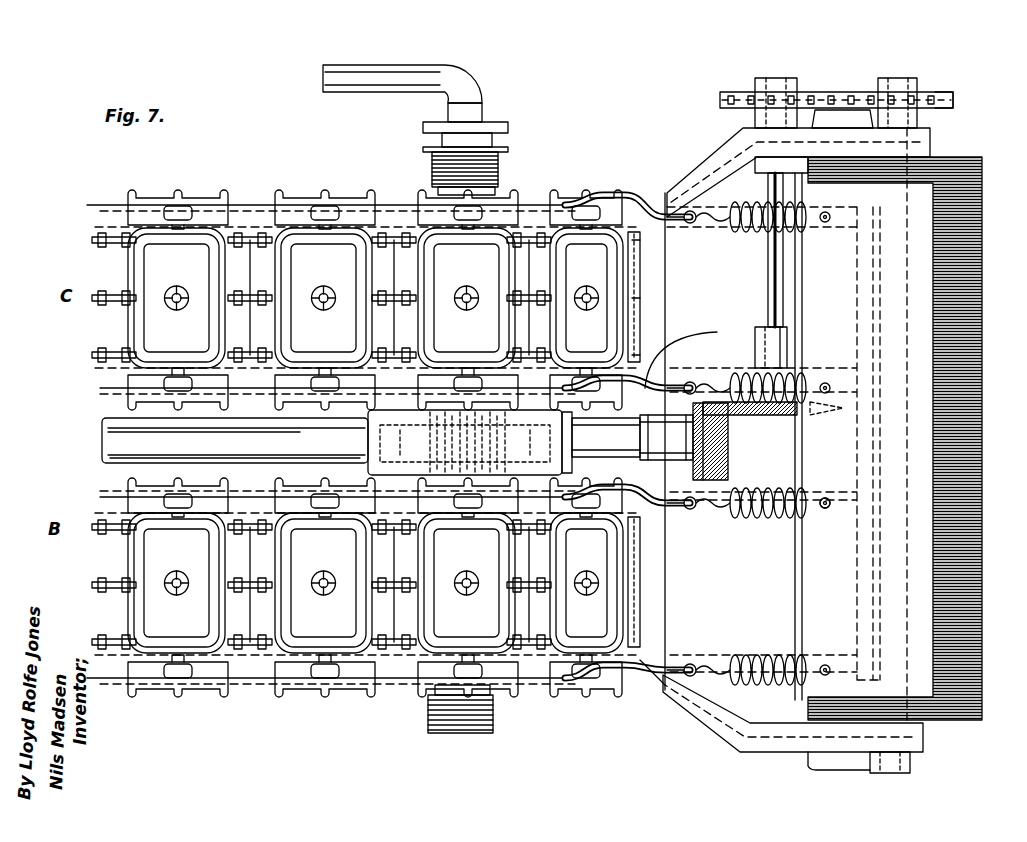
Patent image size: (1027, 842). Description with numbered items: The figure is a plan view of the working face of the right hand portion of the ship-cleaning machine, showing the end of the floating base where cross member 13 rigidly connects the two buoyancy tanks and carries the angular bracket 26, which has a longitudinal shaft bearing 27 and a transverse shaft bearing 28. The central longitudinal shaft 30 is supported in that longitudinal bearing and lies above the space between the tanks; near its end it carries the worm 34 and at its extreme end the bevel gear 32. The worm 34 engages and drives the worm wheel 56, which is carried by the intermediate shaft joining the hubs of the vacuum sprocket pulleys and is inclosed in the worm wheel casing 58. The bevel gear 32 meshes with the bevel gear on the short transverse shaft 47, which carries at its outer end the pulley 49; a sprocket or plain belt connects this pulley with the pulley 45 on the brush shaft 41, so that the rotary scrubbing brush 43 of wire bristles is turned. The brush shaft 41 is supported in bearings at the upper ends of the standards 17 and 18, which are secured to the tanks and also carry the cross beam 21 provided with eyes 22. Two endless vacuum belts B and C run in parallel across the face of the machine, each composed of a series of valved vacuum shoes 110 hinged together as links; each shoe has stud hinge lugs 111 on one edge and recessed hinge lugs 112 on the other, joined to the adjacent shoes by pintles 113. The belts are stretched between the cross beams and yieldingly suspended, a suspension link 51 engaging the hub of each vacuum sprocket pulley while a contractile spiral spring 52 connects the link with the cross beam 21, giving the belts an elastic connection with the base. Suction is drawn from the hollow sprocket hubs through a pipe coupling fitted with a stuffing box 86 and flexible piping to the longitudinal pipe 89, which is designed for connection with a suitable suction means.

The valved vacuum shoe 110 is at (375, 440).
The recessed hinge lugs 112 is at (392, 335).
The pintles 113 is at (394, 332).
The stud hinge lugs 111 is at (262, 540).
The central longitudinal shaft 30 is at (120, 441).
The worm 34 is at (368, 445).
The worm wheel 56 is at (465, 442).
The worm wheel casing 58 is at (486, 445).
The longitudinal shaft bearing 27 is at (655, 438).
The bevel gear 32 is at (728, 462).
The angular bracket 26 is at (692, 340).
The transverse shaft bearing 28 is at (757, 335).
The short transverse shaft 47 is at (768, 262).
The cross beam 21 is at (797, 588).
The rotary scrubbing brush 43 is at (962, 455).
The standard 18 is at (930, 147).
The pulley 49 is at (722, 100).
The brush shaft 41 is at (895, 80).
The pulley 45 is at (936, 92).
The contractile spiral spring 52 is at (748, 518).
The eyes 22 is at (825, 510).
The cross member 13 is at (745, 705).
The standard 17 is at (912, 742).
The suspension link 51 is at (652, 688).
The longitudinal pipe 89 is at (338, 92).
The stuffing box 86 is at (498, 165).